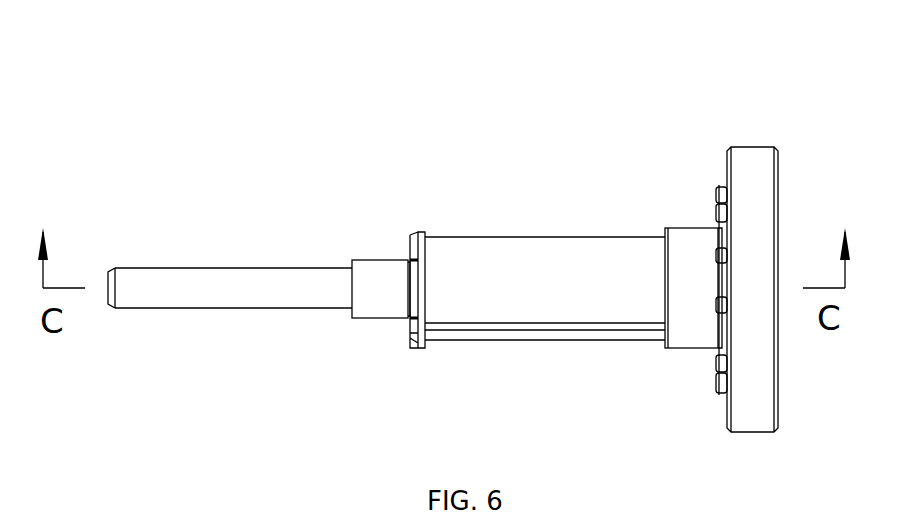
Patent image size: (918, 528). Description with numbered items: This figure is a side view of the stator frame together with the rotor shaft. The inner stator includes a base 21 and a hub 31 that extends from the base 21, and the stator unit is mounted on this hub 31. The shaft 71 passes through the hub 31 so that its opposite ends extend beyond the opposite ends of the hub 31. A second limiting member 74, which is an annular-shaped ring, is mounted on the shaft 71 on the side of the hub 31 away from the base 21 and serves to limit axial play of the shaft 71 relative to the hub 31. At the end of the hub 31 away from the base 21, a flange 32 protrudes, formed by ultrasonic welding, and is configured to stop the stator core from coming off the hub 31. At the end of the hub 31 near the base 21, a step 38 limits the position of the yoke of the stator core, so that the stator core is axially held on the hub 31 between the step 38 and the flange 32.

The shaft 71 is at (194, 288).
The second limiting member 74 is at (382, 280).
The flange 32 is at (420, 232).
The hub 31 is at (540, 265).
The step 38 is at (650, 230).
The base 21 is at (755, 218).